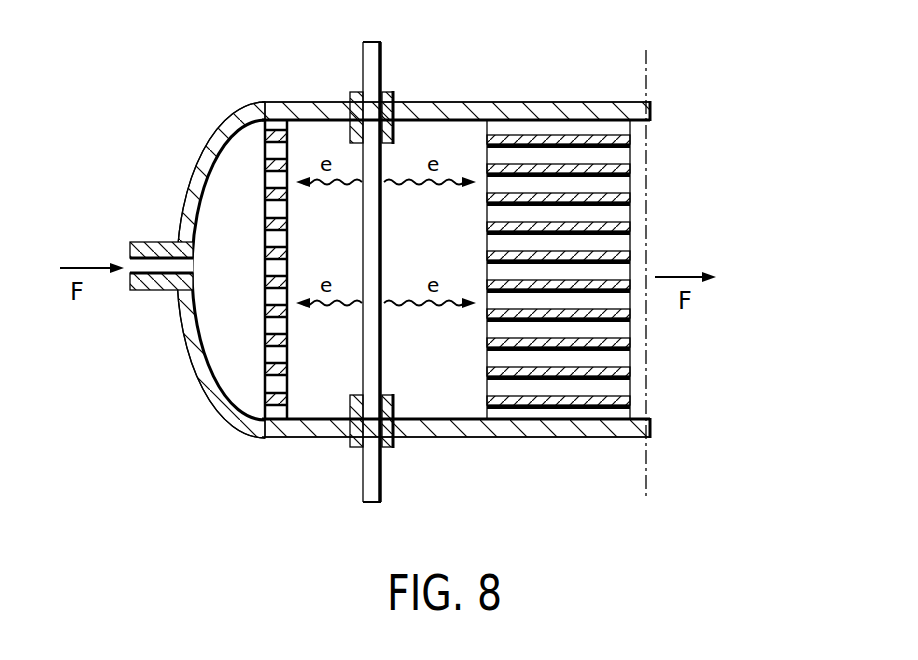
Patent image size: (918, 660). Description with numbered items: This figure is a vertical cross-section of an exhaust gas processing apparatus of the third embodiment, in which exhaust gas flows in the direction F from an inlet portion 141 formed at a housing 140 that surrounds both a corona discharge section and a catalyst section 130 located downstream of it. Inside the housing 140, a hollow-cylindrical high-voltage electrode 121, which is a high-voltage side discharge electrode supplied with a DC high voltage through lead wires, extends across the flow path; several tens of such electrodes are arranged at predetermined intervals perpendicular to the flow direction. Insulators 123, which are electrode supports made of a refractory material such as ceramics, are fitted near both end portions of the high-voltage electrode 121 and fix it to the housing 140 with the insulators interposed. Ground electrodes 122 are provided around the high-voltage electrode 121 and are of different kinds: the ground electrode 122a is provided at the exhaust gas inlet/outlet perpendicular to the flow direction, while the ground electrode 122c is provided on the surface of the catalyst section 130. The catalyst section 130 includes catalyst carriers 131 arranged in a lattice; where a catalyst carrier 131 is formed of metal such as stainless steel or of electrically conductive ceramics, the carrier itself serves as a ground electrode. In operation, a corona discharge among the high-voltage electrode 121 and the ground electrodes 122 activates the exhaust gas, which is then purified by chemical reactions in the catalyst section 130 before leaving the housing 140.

The high-voltage electrode 121 is at (370, 68).
The ground electrodes 122 is at (272, 329).
The ground electrode 122a is at (265, 168).
The ground electrode 122c is at (488, 140).
The insulators 123 is at (350, 98).
The catalyst section 130 is at (577, 130).
The catalyst carrier 131 is at (591, 226).
The housing 140 is at (520, 442).
The inlet portion 141 is at (135, 292).